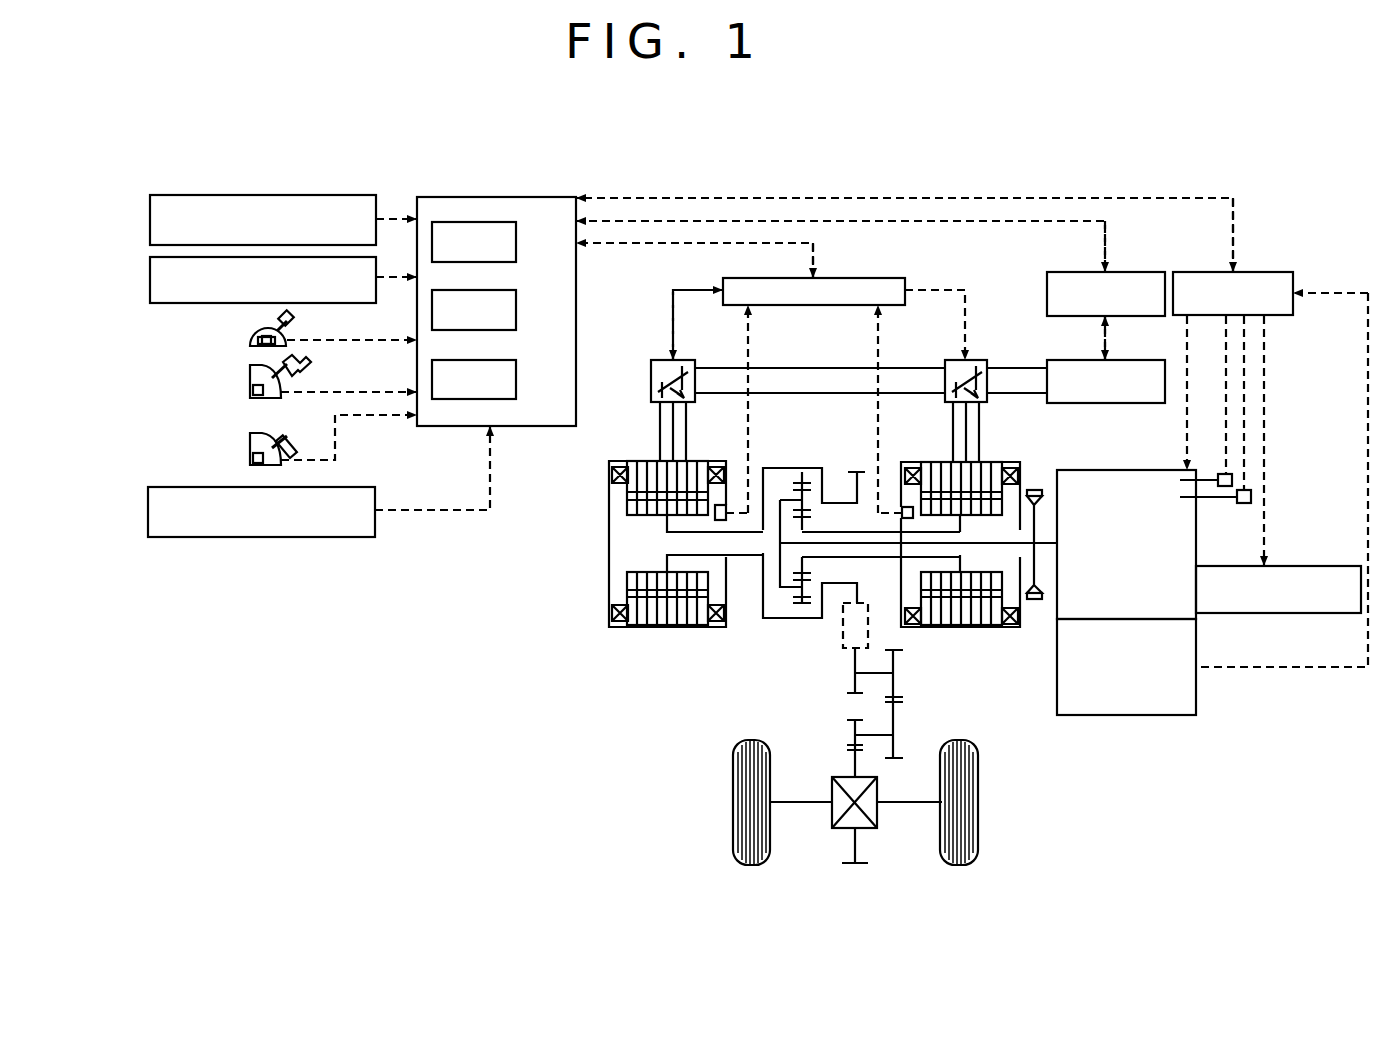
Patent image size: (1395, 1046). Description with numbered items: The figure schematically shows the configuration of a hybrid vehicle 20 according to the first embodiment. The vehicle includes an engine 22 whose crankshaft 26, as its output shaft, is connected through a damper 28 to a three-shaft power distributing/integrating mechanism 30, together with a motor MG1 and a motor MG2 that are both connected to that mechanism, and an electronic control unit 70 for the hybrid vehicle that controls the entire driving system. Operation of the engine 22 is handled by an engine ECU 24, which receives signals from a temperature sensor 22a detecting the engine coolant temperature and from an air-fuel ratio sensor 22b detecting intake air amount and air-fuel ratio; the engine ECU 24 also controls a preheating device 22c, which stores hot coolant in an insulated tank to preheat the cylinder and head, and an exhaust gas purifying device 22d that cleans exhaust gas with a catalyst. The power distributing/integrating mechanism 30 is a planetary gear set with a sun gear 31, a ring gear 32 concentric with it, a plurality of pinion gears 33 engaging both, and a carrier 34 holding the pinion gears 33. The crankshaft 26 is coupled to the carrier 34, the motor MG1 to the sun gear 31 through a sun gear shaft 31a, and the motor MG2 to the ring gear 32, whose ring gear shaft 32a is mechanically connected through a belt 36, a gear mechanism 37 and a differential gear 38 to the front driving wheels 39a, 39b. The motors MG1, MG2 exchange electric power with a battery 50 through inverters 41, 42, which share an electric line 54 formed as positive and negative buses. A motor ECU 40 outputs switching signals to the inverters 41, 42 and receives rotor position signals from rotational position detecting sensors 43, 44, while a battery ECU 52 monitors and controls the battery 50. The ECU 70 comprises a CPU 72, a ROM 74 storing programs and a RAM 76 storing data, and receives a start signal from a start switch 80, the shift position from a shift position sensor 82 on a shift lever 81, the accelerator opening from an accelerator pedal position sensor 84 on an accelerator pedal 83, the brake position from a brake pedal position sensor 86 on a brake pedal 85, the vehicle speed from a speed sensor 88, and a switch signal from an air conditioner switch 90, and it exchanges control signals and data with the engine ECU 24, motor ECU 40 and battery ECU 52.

The hybrid vehicle 20 is at (1130, 175).
The engine 22 is at (1105, 470).
The temperature sensor 22a is at (1232, 478).
The air-fuel ratio sensor 22b is at (1243, 503).
The preheating device 22c is at (1300, 613).
The exhaust gas purifying device 22d is at (1196, 703).
The engine ECU 24 is at (1258, 272).
The crankshaft 26 is at (1048, 545).
The damper 28 is at (1032, 600).
The power distributing/integrating mechanism 30 is at (794, 592).
The sun gear 31 is at (803, 615).
The sun gear shaft 31a is at (840, 577).
The ring gear 32 is at (822, 485).
The ring gear shaft 32a is at (745, 557).
The pinion gears 33 is at (805, 500).
The carrier 34 is at (780, 510).
The belt 36 is at (870, 630).
The gear mechanism 37 is at (960, 730).
The differential gear 38 is at (877, 815).
The front driving wheel 39a is at (735, 848).
The front driving wheel 39b is at (978, 825).
The motor ECU 40 is at (835, 278).
The inverter 41 is at (665, 360).
The inverter 42 is at (975, 360).
The rotational position detecting sensor 43 is at (905, 500).
The rotational position detecting sensor 44 is at (716, 460).
The battery 50 is at (1095, 403).
The battery ECU 52 is at (1047, 278).
The electric line 54 is at (787, 393).
The electronic control unit for a hybrid vehicle 70 is at (496, 276).
The CPU 72 is at (516, 240).
The ROM 74 is at (516, 308).
The RAM 76 is at (516, 378).
The start switch 80 is at (150, 220).
The shift lever 81 is at (275, 327).
The shift position sensor 82 is at (250, 340).
The accelerator pedal 83 is at (270, 367).
The accelerator pedal position sensor 84 is at (253, 390).
The brake pedal 85 is at (270, 436).
The brake pedal position sensor 86 is at (253, 458).
The speed sensor 88 is at (150, 285).
The air conditioner switch 90 is at (148, 512).
The motor MG1 is at (965, 628).
The motor MG2 is at (650, 628).